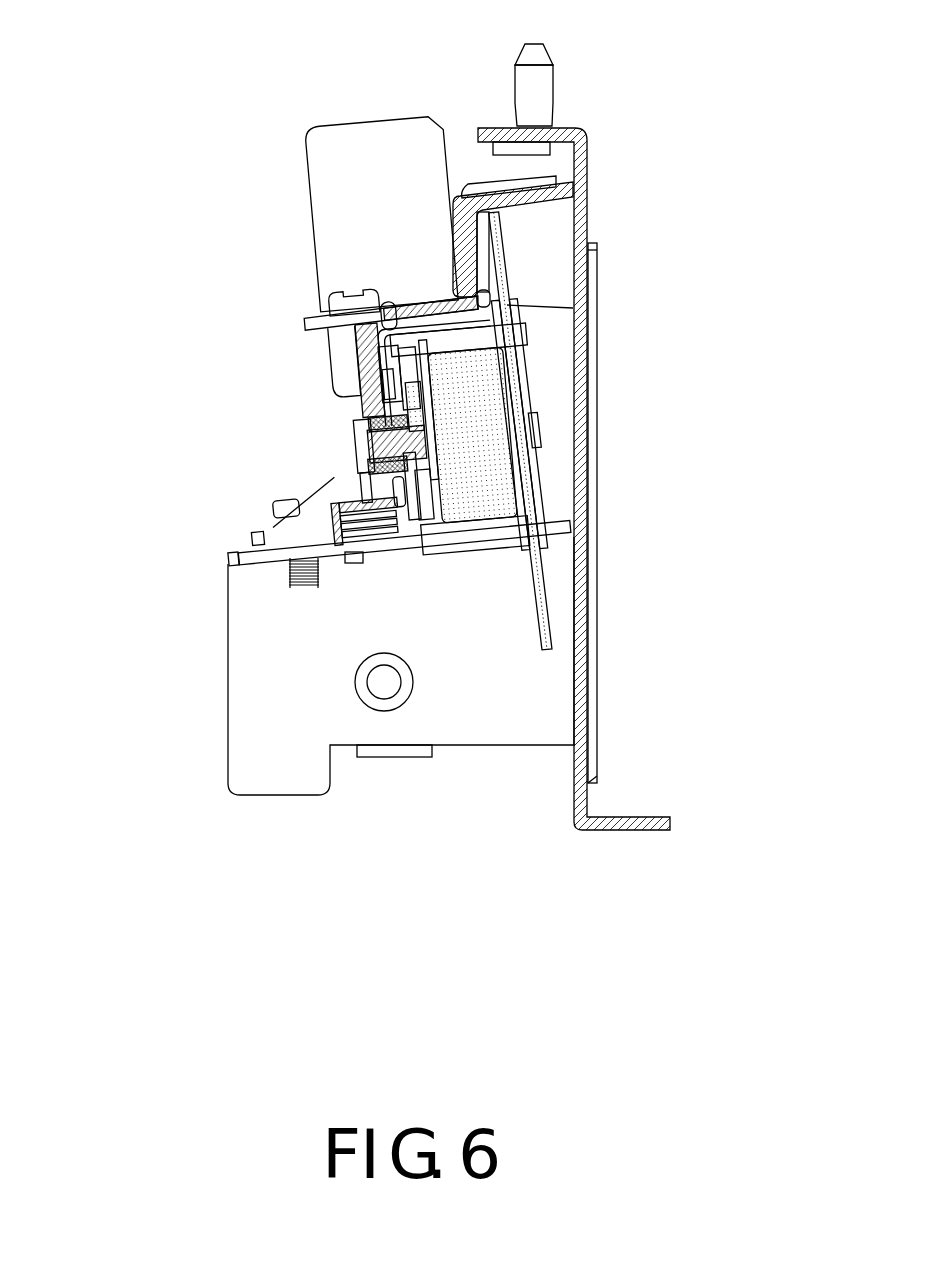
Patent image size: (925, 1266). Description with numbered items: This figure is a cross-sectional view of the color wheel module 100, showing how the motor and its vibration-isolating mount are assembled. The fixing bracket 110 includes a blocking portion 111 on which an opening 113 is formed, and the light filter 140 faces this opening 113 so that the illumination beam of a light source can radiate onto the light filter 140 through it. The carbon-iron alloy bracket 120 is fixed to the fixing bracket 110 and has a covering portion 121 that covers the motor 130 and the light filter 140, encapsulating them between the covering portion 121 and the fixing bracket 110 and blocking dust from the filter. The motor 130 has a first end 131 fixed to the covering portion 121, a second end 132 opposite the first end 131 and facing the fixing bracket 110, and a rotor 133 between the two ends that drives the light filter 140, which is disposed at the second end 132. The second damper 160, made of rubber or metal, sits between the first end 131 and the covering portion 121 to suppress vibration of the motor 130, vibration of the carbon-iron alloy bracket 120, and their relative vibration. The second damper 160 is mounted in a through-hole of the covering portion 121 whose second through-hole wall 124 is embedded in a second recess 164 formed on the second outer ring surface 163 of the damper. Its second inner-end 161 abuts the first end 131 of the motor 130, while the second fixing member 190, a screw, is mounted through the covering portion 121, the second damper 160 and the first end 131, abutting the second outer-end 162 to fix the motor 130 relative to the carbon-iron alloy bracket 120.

The color wheel module 100 is at (92, 54).
The fixing bracket 110 is at (598, 184).
The blocking portion 111 is at (575, 207).
The opening 113 is at (585, 593).
The carbon-iron alloy bracket 120 is at (228, 552).
The covering portion 121 is at (345, 550).
The second through-hole wall 124 is at (337, 510).
The motor 130 is at (608, 448).
The first end 131 is at (533, 578).
The second end 132 is at (536, 528).
The rotor 133 is at (545, 430).
The light filter 140 is at (535, 618).
The second damper 160 is at (273, 369).
The second inner-end 161 is at (335, 300).
The second outer-end 162 is at (365, 432).
The second outer ring surface 163 is at (385, 398).
The second recess 164 is at (375, 352).
The second fixing member 190 is at (372, 445).